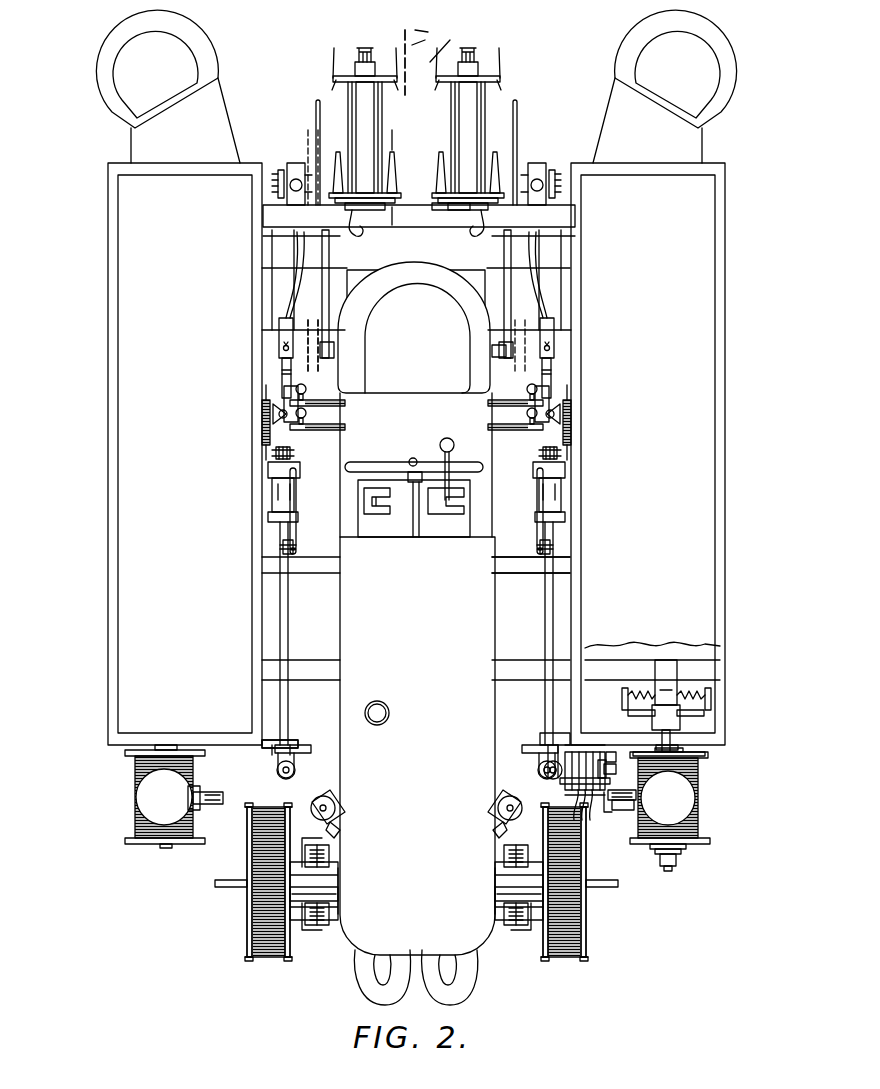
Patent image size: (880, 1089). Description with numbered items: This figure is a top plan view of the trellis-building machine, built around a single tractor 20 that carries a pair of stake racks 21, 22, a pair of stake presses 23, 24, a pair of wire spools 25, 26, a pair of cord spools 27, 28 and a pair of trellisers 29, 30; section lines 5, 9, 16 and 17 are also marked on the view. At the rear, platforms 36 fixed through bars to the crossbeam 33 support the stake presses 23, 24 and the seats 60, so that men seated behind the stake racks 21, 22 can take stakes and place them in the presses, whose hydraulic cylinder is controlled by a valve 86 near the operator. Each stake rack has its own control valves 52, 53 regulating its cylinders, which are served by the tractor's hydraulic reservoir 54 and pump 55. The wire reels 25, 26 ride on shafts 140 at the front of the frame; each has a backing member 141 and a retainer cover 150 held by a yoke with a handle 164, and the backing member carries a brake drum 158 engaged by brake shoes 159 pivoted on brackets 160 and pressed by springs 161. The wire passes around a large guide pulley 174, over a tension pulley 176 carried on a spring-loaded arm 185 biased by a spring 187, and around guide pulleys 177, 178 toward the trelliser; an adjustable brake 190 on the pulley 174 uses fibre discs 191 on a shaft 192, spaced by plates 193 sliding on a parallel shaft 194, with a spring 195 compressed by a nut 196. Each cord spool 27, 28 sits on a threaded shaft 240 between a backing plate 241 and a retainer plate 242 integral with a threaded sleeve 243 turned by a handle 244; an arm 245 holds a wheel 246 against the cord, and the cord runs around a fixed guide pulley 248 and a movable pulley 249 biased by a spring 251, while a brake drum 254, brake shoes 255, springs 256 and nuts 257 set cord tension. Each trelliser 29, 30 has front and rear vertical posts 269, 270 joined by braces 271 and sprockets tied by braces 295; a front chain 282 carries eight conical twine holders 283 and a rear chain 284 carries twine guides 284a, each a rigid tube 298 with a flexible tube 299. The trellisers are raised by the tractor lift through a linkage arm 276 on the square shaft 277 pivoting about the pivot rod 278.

The section line 5 is at (298, 148).
The section line 9 / bracket 9 is at (412, 26).
The section line 16 is at (322, 168).
The section line 17 is at (383, 140).
The tractor 20 is at (403, 645).
The stake rack 21 is at (156, 448).
The stake rack 22 is at (646, 408).
The stake press 23 is at (280, 168).
The stake press 24 is at (553, 168).
The wire spool 25 is at (205, 900).
The wire spool 26 is at (616, 935).
The cord spool 27 is at (150, 790).
The cord spool 28 is at (688, 802).
The trelliser 29 is at (425, 130).
The trelliser 30 is at (505, 79).
The crossbeam 33 is at (513, 668).
The platform 36 is at (185, 143).
The control valve 52 is at (310, 426).
The control valve 53 is at (310, 402).
The hydraulic reservoir 54 is at (357, 275).
The pump 55 is at (476, 282).
The seat 60 is at (162, 80).
The valve 86 is at (283, 326).
The shaft 140 is at (325, 883).
The backing member 141 is at (288, 957).
The retainer cover 150 is at (255, 957).
The brake drum 158 is at (325, 896).
The brake shoe 159 is at (303, 845).
The bracket 160 is at (324, 927).
The spring 161 is at (329, 853).
The handle 164 is at (230, 882).
The large guide pulley 174 is at (548, 755).
The tension pulley 176 is at (285, 547).
The guide pulley 177 is at (276, 454).
The guide pulley 178 is at (282, 405).
The arm 185 is at (296, 508).
The spring 187 is at (261, 420).
The adjustable brake 190 is at (580, 750).
The fibre disc 191 is at (602, 758).
The shaft 192 is at (550, 779).
The plate 193 is at (592, 809).
The shaft 194 is at (570, 785).
The spring 195 is at (616, 770).
The nut 196 is at (616, 758).
The shaft 240 is at (668, 871).
The backing plate 241 is at (683, 750).
The retainer plate 242 is at (683, 848).
The threaded sleeve 243 is at (660, 851).
The handle 244 is at (676, 858).
The arm 245 is at (630, 810).
The wheel 246 is at (636, 805).
The fixed guide pulley 248 is at (288, 778).
The movable pulley 249 is at (330, 790).
The spring 251 is at (334, 828).
The brake drum 254 is at (672, 738).
The brake shoe 255 is at (640, 712).
The spring 256 is at (668, 672).
The nut 257 is at (632, 692).
The front vertical post 269 is at (352, 226).
The rear vertical post 270 is at (362, 64).
The brace 271 is at (476, 110).
The linkage arm 276 is at (332, 330).
The square shaft 277 is at (336, 350).
The pivot rod 278 is at (315, 280).
The chain 282 is at (450, 210).
The twine holder 283 is at (394, 162).
The chain 284 is at (334, 78).
The twine guide 284a is at (418, 45).
The brace 295 is at (318, 96).
The rigid tube 298 is at (335, 79).
The flexible tube 299 is at (396, 48).